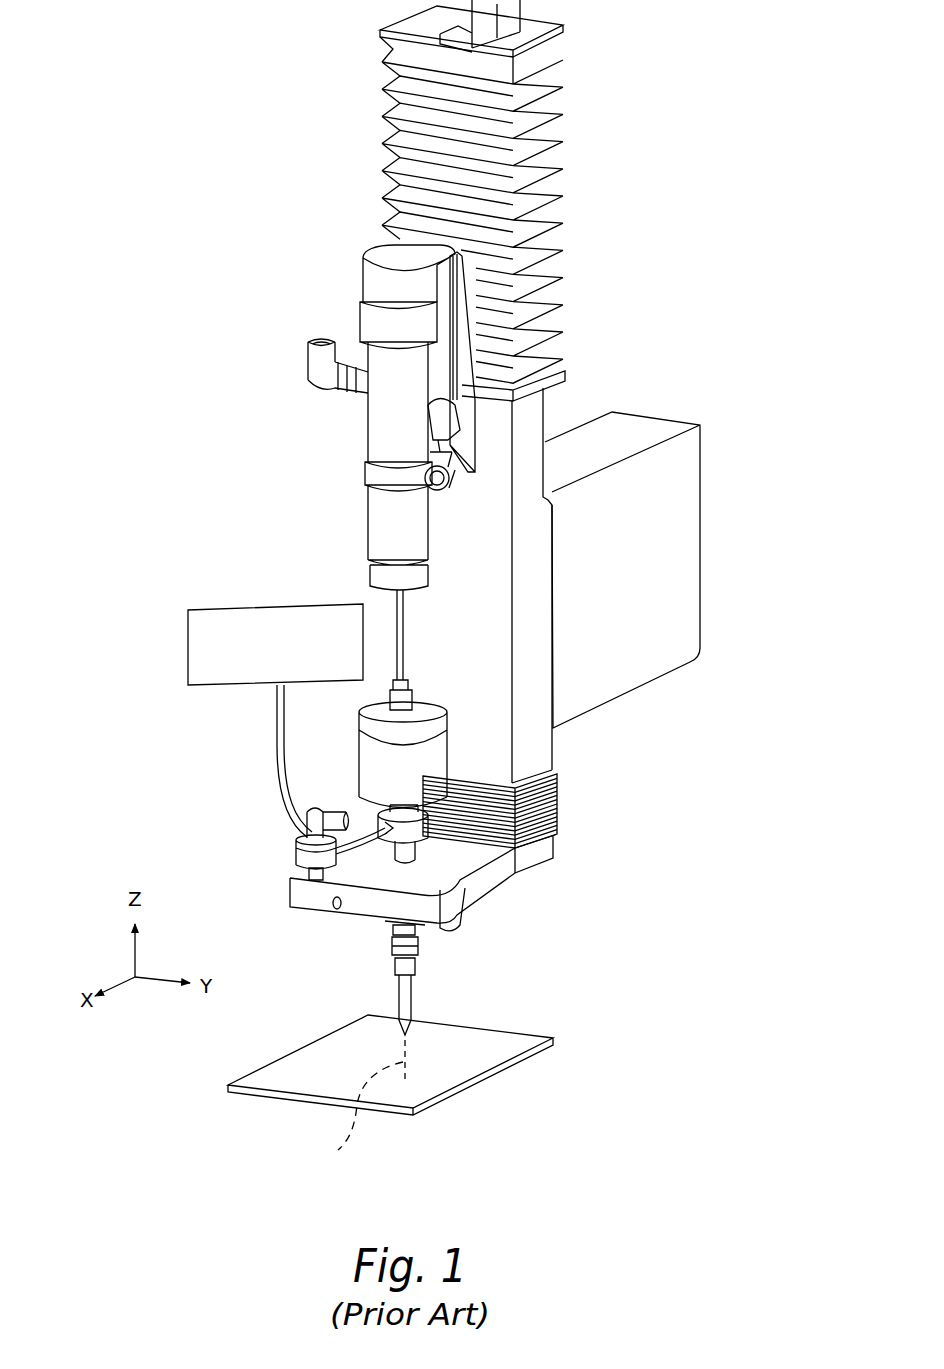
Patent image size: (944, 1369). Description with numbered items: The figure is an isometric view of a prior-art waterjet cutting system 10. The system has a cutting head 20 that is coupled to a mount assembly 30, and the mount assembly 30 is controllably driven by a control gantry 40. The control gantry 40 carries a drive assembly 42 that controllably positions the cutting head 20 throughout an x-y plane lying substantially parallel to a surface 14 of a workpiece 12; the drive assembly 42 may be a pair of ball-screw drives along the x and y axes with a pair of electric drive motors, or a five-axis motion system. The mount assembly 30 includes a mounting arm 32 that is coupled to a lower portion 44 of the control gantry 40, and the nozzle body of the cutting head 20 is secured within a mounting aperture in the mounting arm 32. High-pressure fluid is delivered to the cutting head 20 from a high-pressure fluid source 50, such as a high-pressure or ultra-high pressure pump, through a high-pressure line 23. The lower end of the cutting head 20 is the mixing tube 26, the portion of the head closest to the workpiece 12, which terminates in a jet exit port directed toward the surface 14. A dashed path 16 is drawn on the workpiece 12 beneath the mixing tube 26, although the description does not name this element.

The waterjet cutting system 10 is at (130, 514).
The workpiece 12 is at (566, 1024).
The surface 14 is at (465, 1065).
The cutting path 16 is at (338, 1150).
The cutting head 20 is at (345, 737).
The high-pressure line 23 is at (273, 748).
The mixing tube 26 is at (412, 1000).
The mount assembly 30 is at (578, 842).
The mounting arm 32 is at (290, 890).
The control gantry 40 is at (661, 227).
The drive assembly 42 is at (655, 418).
The lower portion 44 is at (560, 792).
The high-pressure fluid source 50 is at (188, 648).